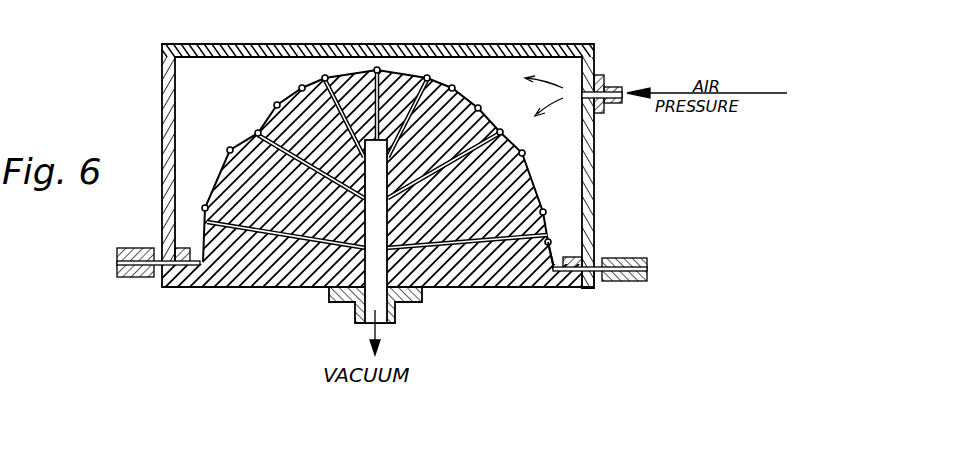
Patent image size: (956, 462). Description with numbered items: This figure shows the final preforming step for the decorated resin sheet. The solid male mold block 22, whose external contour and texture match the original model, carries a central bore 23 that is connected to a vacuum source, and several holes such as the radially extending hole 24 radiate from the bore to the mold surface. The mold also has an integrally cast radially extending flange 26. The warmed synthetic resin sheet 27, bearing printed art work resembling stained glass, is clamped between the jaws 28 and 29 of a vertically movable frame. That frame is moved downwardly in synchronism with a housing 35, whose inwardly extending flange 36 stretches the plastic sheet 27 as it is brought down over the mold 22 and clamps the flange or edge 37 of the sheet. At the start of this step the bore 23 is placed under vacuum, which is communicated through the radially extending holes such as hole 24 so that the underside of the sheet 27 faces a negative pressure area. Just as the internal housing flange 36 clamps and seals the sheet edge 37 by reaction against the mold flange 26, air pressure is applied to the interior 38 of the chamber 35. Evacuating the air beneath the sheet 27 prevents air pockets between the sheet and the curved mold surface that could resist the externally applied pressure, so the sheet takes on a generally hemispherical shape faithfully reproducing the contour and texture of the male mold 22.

The male mold block 22 is at (233, 288).
The central bore 23 is at (367, 325).
The radially extending hole 24 is at (483, 273).
The radially extending flange 26 is at (550, 288).
The plastic sheet 27 is at (212, 125).
The jaw 28 is at (123, 275).
The jaw 29 is at (648, 275).
The housing 35 is at (583, 151).
The inwardly extending flange 36 is at (567, 260).
The flange or edge of the sheet 37 is at (583, 290).
The interior of chamber 38 is at (565, 75).